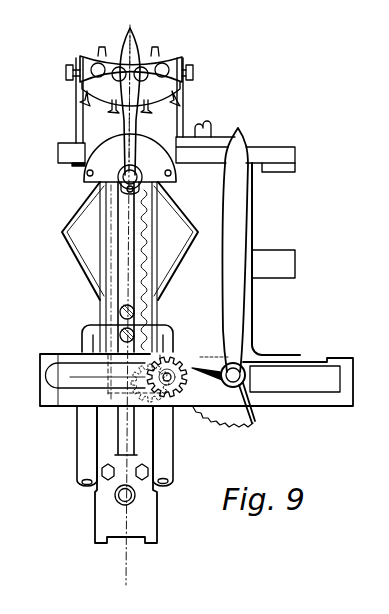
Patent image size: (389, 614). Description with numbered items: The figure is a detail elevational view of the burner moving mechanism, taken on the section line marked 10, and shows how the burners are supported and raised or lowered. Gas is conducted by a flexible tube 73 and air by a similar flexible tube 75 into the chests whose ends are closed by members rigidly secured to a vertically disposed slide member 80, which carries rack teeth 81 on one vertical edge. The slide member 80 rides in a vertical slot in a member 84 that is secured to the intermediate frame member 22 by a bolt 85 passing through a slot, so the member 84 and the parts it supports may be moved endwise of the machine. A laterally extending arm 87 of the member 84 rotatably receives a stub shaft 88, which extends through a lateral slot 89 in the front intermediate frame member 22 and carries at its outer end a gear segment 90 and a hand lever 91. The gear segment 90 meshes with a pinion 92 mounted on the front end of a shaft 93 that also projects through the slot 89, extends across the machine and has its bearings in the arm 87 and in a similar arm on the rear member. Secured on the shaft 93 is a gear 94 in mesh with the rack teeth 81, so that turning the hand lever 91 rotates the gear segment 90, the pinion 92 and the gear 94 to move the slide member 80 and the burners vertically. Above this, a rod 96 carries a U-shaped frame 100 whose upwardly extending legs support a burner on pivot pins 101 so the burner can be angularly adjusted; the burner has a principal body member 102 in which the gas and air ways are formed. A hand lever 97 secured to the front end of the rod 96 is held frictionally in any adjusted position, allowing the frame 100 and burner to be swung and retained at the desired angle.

The section line 10 is at (125, 303).
The intermediate frame member 22 is at (253, 317).
The tube 73 is at (167, 467).
The flexible tube 75 is at (85, 448).
The slide member 80 is at (128, 318).
The rack teeth 81 is at (149, 253).
The member 84 is at (228, 133).
The bolt 85 is at (206, 127).
The laterally extending arm 87 is at (207, 357).
The stub shaft 88 is at (247, 377).
The lateral slot 89 is at (308, 375).
The gear segment 90 is at (223, 395).
The hand lever 91 is at (235, 250).
The pinion 92 is at (168, 376).
The shaft 93 is at (172, 388).
The gear 94 is at (176, 356).
The rod 96 is at (117, 178).
The hand lever 97 is at (130, 101).
The U-shaped frame 100 is at (76, 107).
The pivot pin 101 is at (194, 70).
The principal body member 102 is at (173, 60).